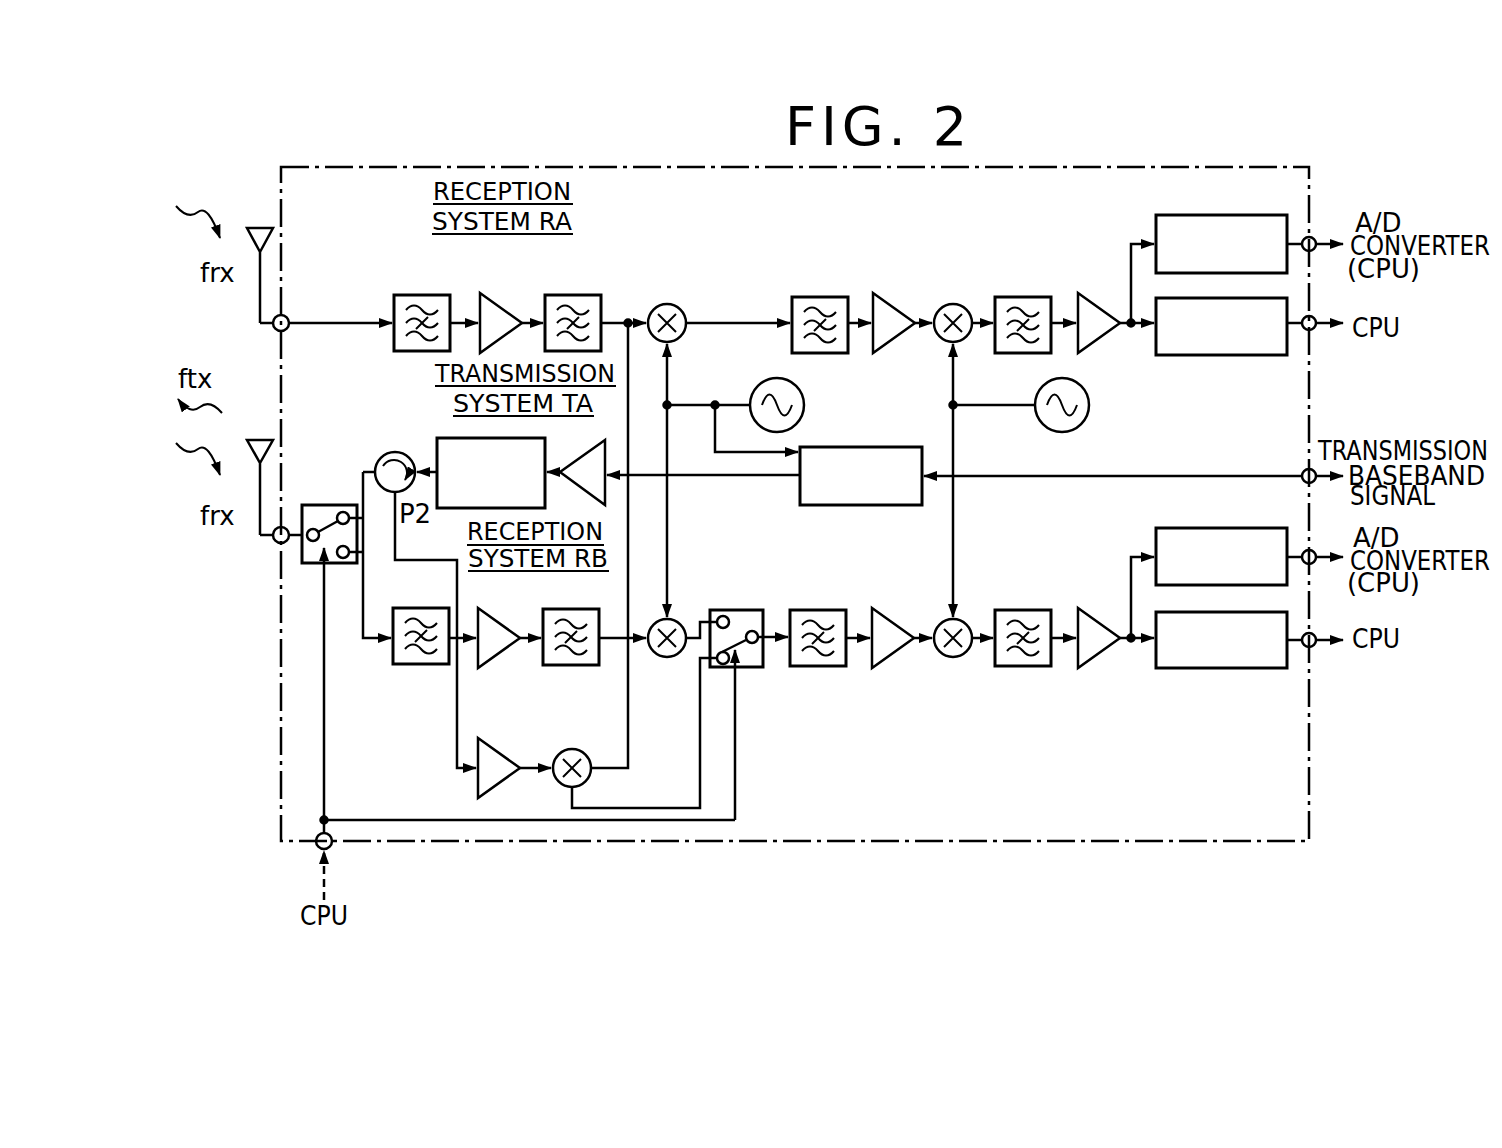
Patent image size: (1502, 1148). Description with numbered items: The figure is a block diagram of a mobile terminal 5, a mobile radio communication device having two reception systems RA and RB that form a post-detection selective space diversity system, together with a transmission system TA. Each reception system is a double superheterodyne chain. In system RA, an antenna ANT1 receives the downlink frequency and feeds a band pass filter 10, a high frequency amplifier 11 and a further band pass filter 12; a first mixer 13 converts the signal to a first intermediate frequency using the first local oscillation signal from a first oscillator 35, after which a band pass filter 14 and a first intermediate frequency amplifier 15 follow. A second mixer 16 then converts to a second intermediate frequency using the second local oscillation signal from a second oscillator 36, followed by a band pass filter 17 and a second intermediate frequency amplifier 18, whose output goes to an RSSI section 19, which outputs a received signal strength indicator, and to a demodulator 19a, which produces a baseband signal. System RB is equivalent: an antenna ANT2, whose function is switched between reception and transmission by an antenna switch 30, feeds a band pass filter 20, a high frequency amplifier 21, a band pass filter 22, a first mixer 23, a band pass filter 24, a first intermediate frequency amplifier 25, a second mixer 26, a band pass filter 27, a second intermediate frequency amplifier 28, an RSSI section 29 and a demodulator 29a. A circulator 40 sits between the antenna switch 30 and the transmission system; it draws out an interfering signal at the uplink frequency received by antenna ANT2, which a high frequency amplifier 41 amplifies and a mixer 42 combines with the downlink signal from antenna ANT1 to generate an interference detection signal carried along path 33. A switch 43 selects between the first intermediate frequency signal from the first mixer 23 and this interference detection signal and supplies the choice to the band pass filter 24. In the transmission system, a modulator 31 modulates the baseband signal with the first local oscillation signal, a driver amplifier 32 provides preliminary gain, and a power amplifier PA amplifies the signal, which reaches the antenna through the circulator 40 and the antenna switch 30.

The mobile terminal 5 is at (515, 166).
The antenna ANT1 is at (256, 228).
The antenna ANT2 is at (256, 438).
The band pass filter 10 is at (432, 295).
The high frequency amplifier 11 is at (505, 306).
The band pass filter 12 is at (575, 294).
The first mixer 13 is at (668, 303).
The band pass filter 14 is at (820, 297).
The first intermediate frequency amplifier 15 is at (894, 310).
The second mixer 16 is at (954, 304).
The band pass filter 17 is at (1025, 297).
The second intermediate frequency amplifier 18 is at (1094, 308).
The RSSI section 19 is at (1192, 215).
The demodulator 19a is at (1225, 357).
The band pass filter 20 is at (433, 608).
The high frequency amplifier 21 is at (505, 620).
The band pass filter 22 is at (553, 604).
The first mixer 23 is at (676, 605).
The band pass filter 24 is at (824, 608).
The first intermediate frequency amplifier 25 is at (899, 621).
The second mixer 26 is at (964, 619).
The band pass filter 27 is at (1027, 608).
The second intermediate frequency amplifier 28 is at (1094, 614).
The RSSI section 29 is at (1192, 528).
The demodulator 29a is at (1228, 668).
The antenna switch 30 is at (321, 502).
The modulator 31 is at (852, 447).
The driver amplifier 32 is at (580, 456).
The signal path from circulator to reception system RB 33 is at (444, 509).
The first oscillator 35 is at (806, 405).
The second oscillator 36 is at (1091, 405).
The circulator 40 is at (392, 450).
The high frequency amplifier 41 is at (504, 751).
The mixer 42 is at (574, 749).
The switch 43 is at (754, 607).
The power amplifier PA is at (491, 473).